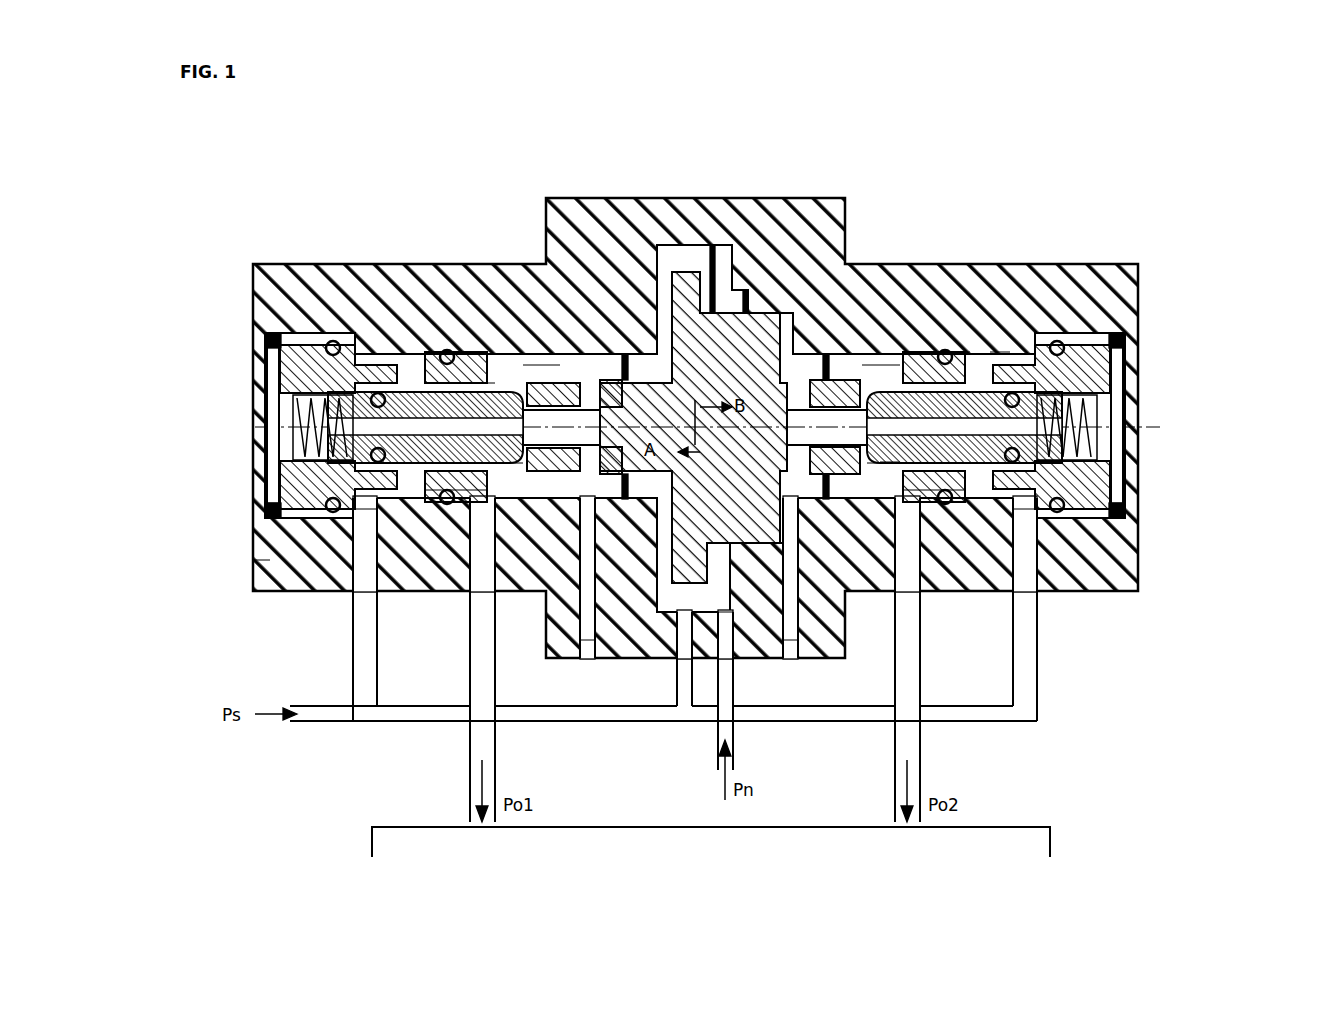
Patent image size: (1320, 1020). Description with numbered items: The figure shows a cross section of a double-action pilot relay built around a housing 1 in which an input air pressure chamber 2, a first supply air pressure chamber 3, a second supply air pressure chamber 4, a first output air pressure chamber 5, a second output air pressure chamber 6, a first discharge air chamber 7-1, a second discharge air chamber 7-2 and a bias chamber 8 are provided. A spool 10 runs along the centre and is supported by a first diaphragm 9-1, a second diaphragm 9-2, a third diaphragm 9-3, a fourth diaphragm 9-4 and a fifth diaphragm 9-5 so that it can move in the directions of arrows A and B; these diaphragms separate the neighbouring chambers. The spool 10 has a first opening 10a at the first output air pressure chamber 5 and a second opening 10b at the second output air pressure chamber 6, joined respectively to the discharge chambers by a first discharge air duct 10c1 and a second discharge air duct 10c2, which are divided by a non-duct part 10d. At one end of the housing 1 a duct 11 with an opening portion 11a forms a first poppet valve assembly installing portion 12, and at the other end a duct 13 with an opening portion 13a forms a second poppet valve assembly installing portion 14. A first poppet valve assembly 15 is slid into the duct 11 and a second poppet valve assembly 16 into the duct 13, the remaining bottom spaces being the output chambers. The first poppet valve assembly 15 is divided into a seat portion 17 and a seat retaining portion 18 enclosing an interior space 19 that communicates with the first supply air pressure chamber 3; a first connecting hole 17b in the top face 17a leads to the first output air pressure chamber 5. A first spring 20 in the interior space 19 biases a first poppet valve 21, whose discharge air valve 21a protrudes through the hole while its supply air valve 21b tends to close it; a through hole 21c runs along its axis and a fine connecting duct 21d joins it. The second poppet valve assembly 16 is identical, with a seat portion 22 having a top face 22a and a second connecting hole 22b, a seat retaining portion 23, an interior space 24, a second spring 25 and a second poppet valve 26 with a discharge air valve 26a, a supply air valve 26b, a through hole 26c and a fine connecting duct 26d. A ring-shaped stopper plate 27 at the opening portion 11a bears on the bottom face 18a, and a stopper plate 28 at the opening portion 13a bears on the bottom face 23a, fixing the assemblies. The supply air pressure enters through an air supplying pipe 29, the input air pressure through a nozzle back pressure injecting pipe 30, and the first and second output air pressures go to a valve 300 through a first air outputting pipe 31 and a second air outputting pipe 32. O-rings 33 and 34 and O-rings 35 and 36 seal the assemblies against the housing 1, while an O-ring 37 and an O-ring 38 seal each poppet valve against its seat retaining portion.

The housing 1 is at (1110, 265).
The input air pressure chamber 2 is at (746, 290).
The first supply air pressure chamber 3 is at (350, 350).
The second supply air pressure chamber 4 is at (1010, 393).
The first output air pressure chamber 5 is at (480, 383).
The second output air pressure chamber 6 is at (872, 365).
The first discharge air chamber 7-1 is at (587, 640).
The second discharge air chamber 7-2 is at (792, 640).
The bias chamber 8 is at (686, 300).
The first diaphragm 9-1 is at (553, 383).
The second diaphragm 9-2 is at (612, 380).
The third diaphragm 9-3 is at (720, 292).
The fourth diaphragm 9-4 is at (790, 330).
The fifth diaphragm 9-5 is at (832, 380).
The spool 10 is at (665, 545).
The first opening 10a is at (498, 392).
The second opening 10b is at (915, 505).
The first discharge air duct 10c1 is at (495, 470).
The second discharge air duct 10c2 is at (880, 470).
The non-duct part 10d is at (745, 655).
The duct 11 is at (378, 462).
The opening portion 11a is at (292, 398).
The first poppet valve assembly installing portion 12 is at (325, 395).
The duct 13 is at (1025, 512).
The opening portion 13a is at (1128, 440).
The second poppet valve assembly installing portion 14 is at (1055, 342).
The first poppet valve assembly 15 is at (282, 345).
The second poppet valve assembly 16 is at (1120, 400).
The seat portion 17 is at (426, 345).
The top face 17a is at (395, 492).
The first connecting hole 17b is at (405, 492).
The seat retaining portion 18 is at (270, 498).
The bottom face 18a is at (268, 430).
The interior space 19 is at (268, 335).
The first spring 20 is at (265, 565).
The first poppet valve 21 is at (352, 505).
The discharge air valve 21a is at (535, 365).
The supply air valve 21b is at (392, 365).
The through hole 21c is at (465, 503).
The fine connecting duct 21d is at (470, 352).
The seat portion 22 is at (995, 362).
The top face 22a is at (990, 492).
The second connecting hole 22b is at (935, 505).
The seat retaining portion 23 is at (1128, 540).
The bottom face 23a is at (1125, 490).
The interior space 24 is at (952, 503).
The second spring 25 is at (1130, 430).
The second poppet valve 26 is at (1055, 395).
The discharge air valve 26a is at (925, 383).
The supply air valve 26b is at (1000, 352).
The through hole 26c is at (1100, 512).
The fine connecting duct 26d is at (960, 350).
The stopper plate 27 is at (265, 515).
The stopper plate 28 is at (1130, 335).
The air supplying pipe 29 is at (358, 728).
The nozzle back pressure injecting pipe 30 is at (716, 752).
The first air outputting pipe 31 is at (468, 762).
The second air outputting pipe 32 is at (893, 765).
The O-ring 33 is at (443, 352).
The O-ring 34 is at (328, 345).
The O-ring 35 is at (950, 352).
The O-ring 36 is at (1080, 335).
The O-ring 37 is at (365, 512).
The O-ring 38 is at (1118, 520).
The valve 300 is at (1050, 828).